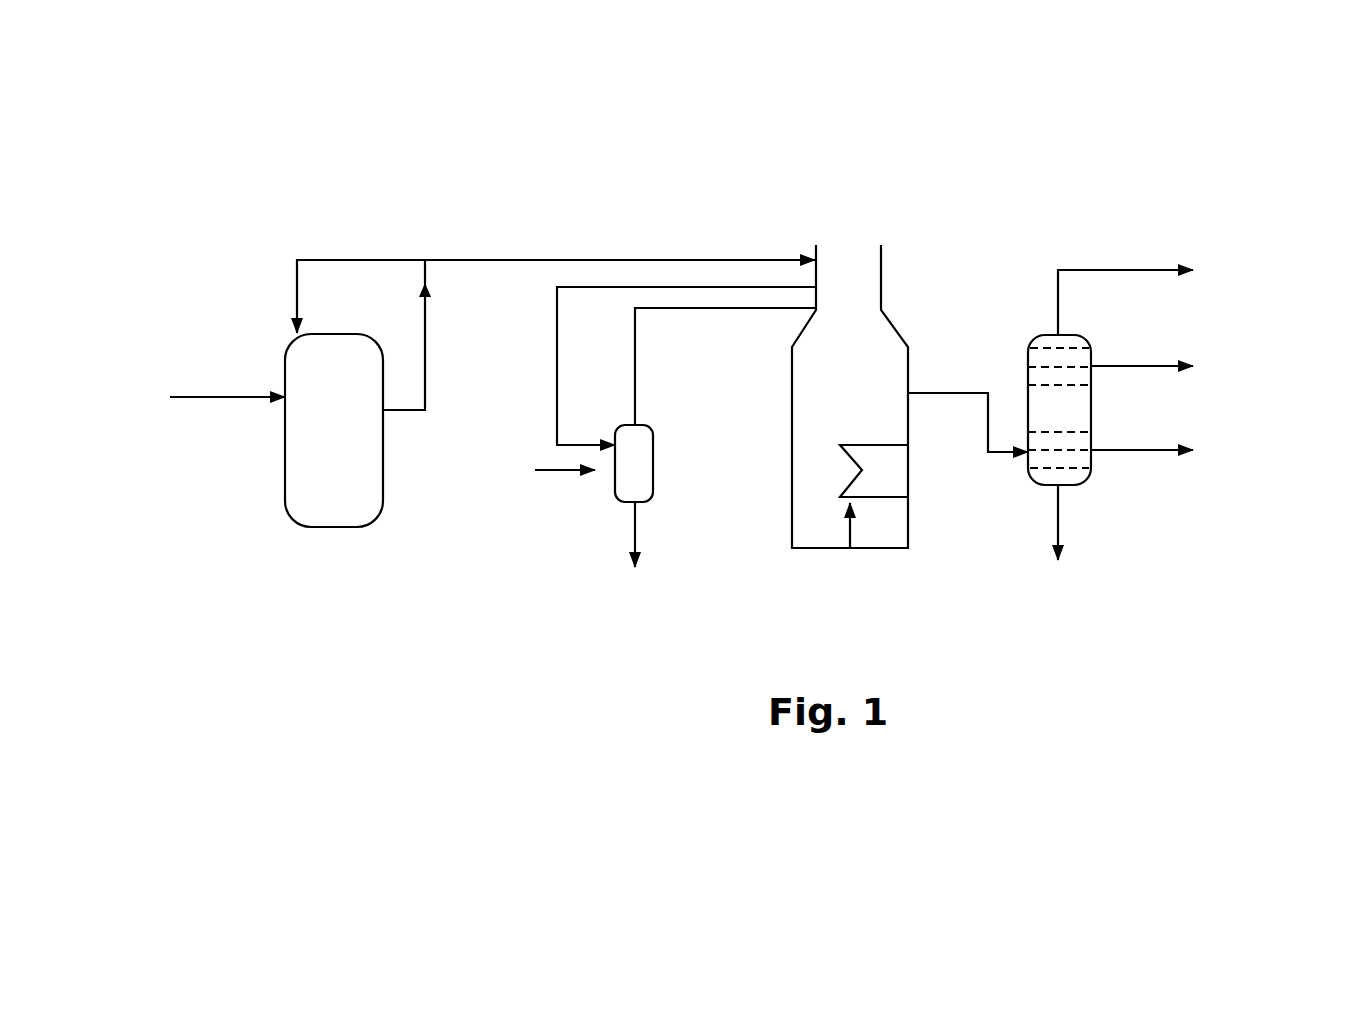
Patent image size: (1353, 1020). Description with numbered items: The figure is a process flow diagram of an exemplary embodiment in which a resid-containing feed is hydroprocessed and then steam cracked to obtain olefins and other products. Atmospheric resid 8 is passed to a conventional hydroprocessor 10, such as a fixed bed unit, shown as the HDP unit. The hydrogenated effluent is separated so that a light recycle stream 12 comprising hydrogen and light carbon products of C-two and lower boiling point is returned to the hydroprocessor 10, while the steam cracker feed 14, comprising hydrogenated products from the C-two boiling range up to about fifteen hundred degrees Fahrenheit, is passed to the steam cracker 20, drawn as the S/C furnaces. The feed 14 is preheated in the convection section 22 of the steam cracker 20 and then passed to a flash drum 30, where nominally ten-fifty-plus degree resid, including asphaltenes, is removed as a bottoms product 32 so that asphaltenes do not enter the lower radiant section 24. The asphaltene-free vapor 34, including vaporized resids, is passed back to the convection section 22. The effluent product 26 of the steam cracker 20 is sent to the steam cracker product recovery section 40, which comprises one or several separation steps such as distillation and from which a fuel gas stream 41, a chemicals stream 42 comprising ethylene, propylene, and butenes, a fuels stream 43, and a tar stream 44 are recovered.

The atmospheric resid 8 is at (214, 397).
The hydroprocessor 10 is at (335, 482).
The recycle stream 12 is at (297, 296).
The steam cracker feed 14 is at (710, 259).
The steam cracker 20 is at (877, 345).
The convection section 22 is at (830, 298).
The radiant section 24 is at (800, 488).
The effluent product 26 is at (952, 393).
The flash drum 30 is at (638, 470).
The bottoms product 32 is at (637, 516).
The asphaltene-free vapor 34 is at (635, 360).
The steam cracker product recovery section 40 is at (1077, 428).
The fuel gas stream 41 is at (1140, 269).
The chemicals stream 42 is at (1149, 365).
The fuels stream 43 is at (1153, 449).
The tar stream 44 is at (1060, 507).